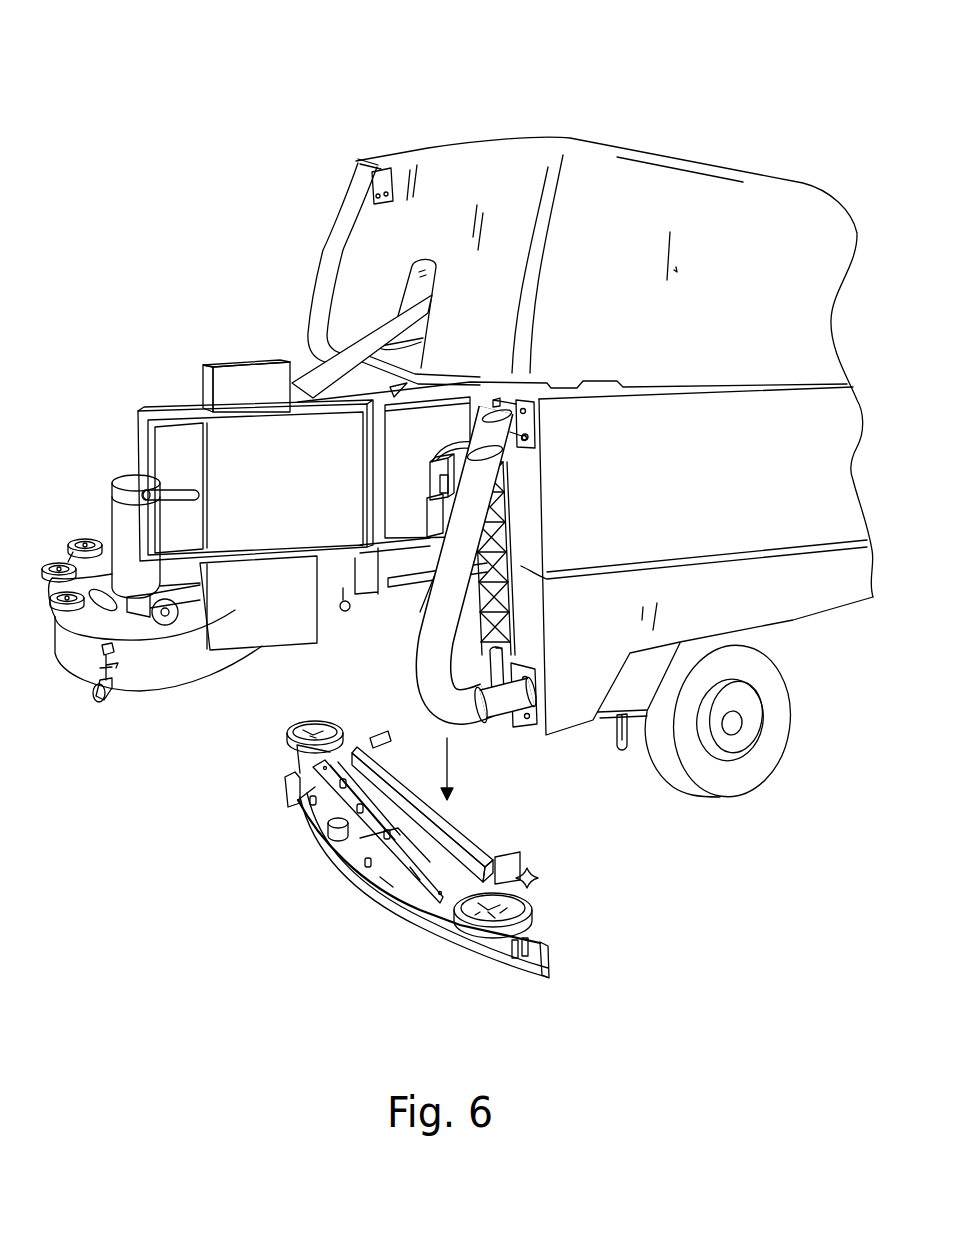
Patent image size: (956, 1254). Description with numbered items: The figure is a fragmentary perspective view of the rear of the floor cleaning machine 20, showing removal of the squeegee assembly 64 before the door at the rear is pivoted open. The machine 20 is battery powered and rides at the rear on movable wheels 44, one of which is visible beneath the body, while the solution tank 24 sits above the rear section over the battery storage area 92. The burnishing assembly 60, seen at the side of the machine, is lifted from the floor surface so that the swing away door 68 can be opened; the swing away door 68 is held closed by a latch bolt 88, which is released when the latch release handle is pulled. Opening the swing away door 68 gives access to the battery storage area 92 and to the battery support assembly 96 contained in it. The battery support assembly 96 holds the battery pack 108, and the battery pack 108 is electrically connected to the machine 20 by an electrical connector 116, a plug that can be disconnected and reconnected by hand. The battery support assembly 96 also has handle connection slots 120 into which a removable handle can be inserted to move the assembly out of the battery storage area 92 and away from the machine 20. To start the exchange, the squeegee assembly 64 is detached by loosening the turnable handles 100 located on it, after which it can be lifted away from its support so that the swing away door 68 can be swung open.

The floor cleaning machine 20 is at (730, 72).
The solution tank 24 is at (428, 150).
The movable wheels 44 is at (708, 799).
The burnishing assembly 60 is at (82, 660).
The squeegee assembly 64 is at (553, 963).
The swing away door 68 is at (243, 455).
The latch bolt 88 is at (153, 497).
The battery storage area 92 is at (403, 426).
The battery support assembly 96 is at (419, 605).
The turnable handles 100 is at (377, 737).
The battery pack 108 is at (423, 717).
The electrical connector 116 is at (430, 510).
The handle connection slots 120 is at (490, 651).